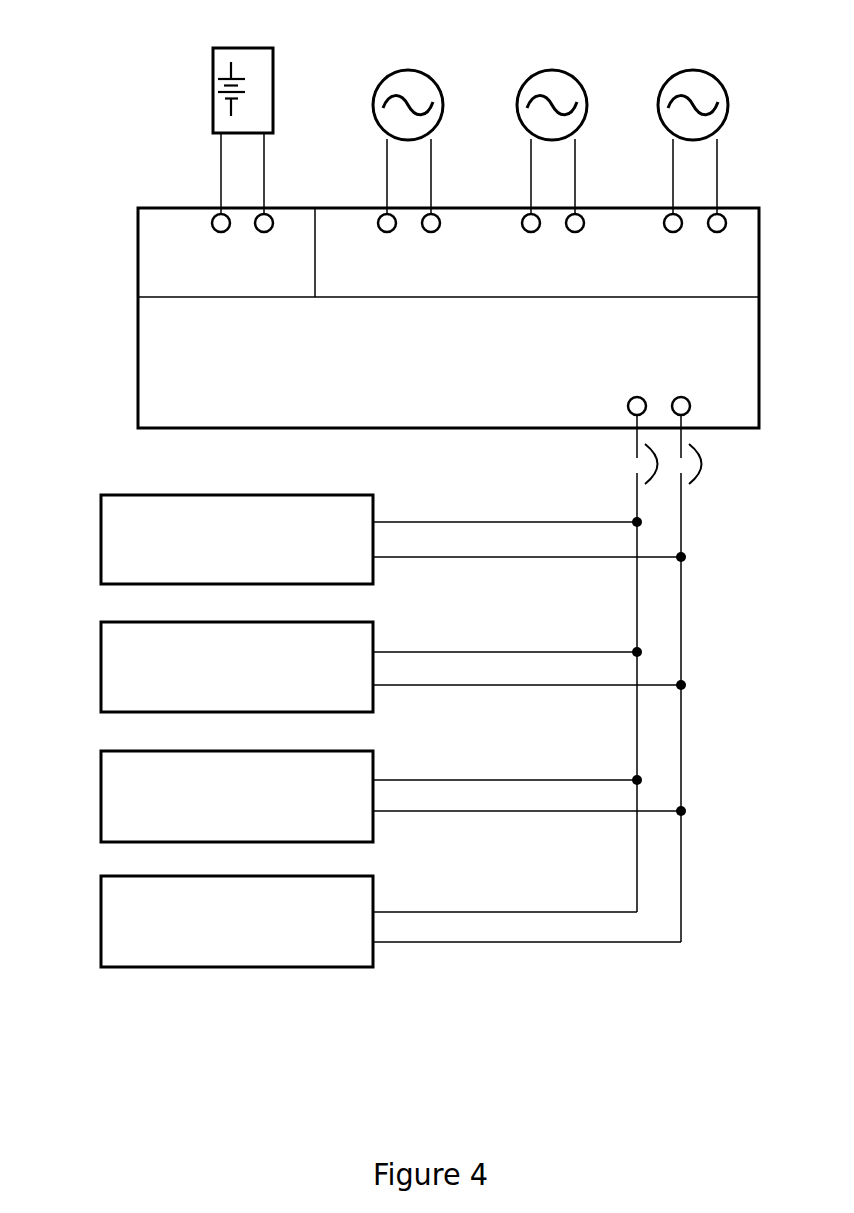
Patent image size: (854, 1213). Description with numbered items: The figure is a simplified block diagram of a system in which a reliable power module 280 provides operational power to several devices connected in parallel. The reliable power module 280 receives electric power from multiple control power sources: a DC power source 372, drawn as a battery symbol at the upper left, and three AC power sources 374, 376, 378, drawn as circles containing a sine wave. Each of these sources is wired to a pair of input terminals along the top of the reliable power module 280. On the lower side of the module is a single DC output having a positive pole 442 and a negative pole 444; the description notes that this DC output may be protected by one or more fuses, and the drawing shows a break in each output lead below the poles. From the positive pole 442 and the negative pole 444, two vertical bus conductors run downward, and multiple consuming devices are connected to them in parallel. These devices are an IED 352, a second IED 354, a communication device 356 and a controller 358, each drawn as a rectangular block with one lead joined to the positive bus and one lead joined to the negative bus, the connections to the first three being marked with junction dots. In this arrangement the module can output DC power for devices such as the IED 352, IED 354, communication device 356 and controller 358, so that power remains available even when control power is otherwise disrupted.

The reliable power module 280 is at (138, 252).
The DC power source 372 is at (213, 78).
The AC power source 374 is at (375, 93).
The AC power source 376 is at (519, 92).
The AC power source 378 is at (660, 92).
The positive pole 442 is at (632, 397).
The negative pole 444 is at (686, 397).
The IED 352 is at (99, 513).
The IED 354 is at (99, 651).
The communication device 356 is at (99, 780).
The controller 358 is at (99, 901).